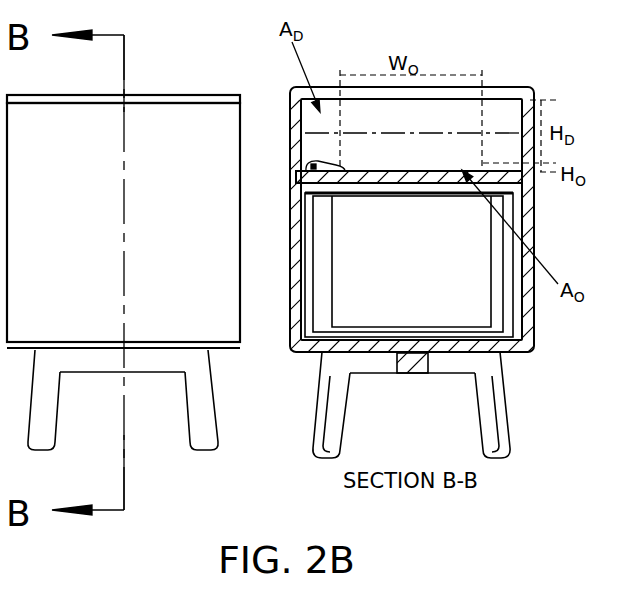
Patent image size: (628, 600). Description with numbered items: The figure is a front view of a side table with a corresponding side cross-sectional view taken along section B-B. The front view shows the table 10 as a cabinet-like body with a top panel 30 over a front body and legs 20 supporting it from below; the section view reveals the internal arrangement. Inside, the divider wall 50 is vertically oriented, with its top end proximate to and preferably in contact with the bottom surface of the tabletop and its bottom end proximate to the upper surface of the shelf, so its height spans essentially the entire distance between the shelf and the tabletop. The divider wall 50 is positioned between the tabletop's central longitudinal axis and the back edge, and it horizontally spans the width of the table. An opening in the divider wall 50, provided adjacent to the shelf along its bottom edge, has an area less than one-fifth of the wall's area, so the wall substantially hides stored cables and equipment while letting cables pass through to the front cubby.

The top panel 10 is at (28, 95).
The base legs 20 is at (123, 475).
The cabinet body 30 is at (75, 228).
The divider wall 50 is at (316, 133).